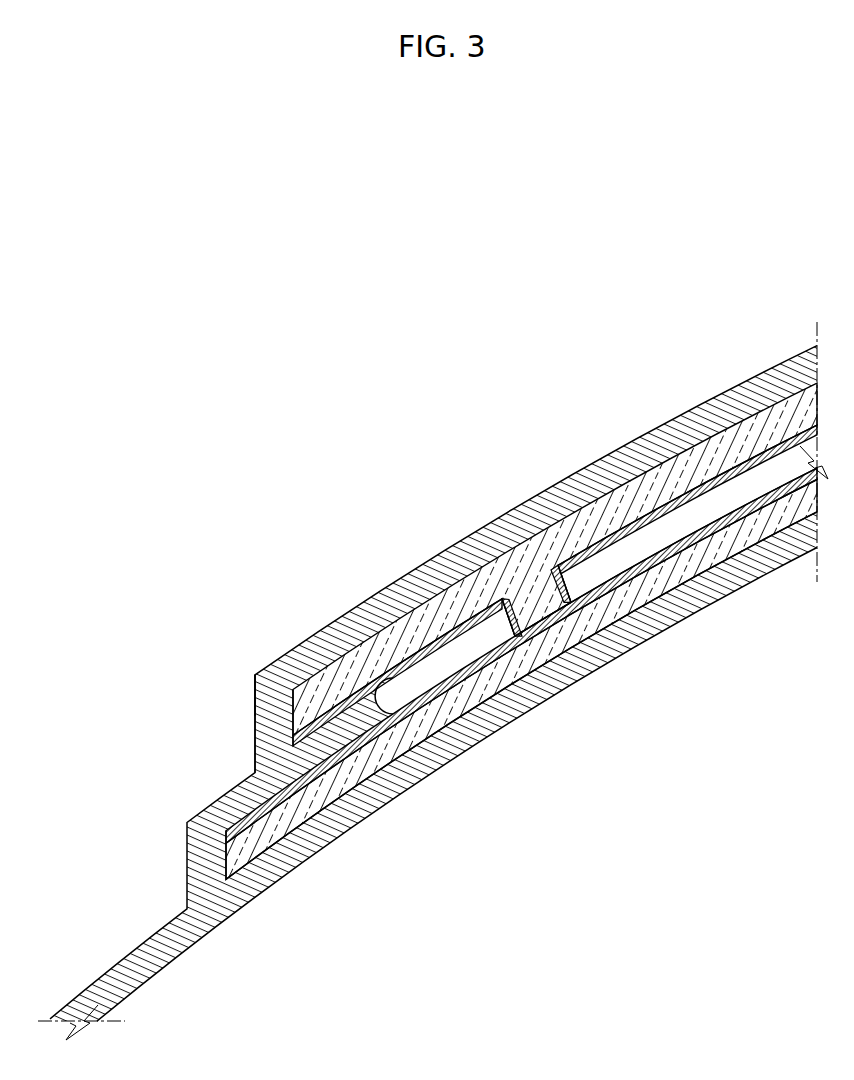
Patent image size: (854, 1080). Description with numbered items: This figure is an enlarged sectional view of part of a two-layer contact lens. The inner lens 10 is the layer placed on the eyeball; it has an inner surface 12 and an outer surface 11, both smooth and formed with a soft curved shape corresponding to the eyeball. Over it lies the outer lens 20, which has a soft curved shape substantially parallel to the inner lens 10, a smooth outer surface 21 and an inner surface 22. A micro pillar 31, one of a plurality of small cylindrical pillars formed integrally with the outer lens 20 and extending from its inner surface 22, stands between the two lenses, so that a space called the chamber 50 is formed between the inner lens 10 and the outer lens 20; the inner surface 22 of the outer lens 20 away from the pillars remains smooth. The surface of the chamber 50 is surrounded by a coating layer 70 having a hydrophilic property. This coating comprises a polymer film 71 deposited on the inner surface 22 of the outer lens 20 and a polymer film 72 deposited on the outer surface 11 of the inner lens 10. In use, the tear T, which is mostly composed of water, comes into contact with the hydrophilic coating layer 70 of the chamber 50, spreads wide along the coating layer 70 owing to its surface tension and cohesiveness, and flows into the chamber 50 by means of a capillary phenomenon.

The inner lens 10 is at (433, 751).
The outer surface 11 is at (531, 672).
The inner surface 12 is at (735, 575).
The outer lens 20 is at (536, 559).
The outer surface 21 is at (505, 572).
The inner surface 22 is at (337, 683).
The micro pillar 31 is at (568, 612).
The chamber 50 is at (723, 495).
The coating layer 70 is at (521, 635).
The polymer film 71 is at (430, 640).
The polymer film 72 is at (462, 680).
The tear T is at (302, 657).